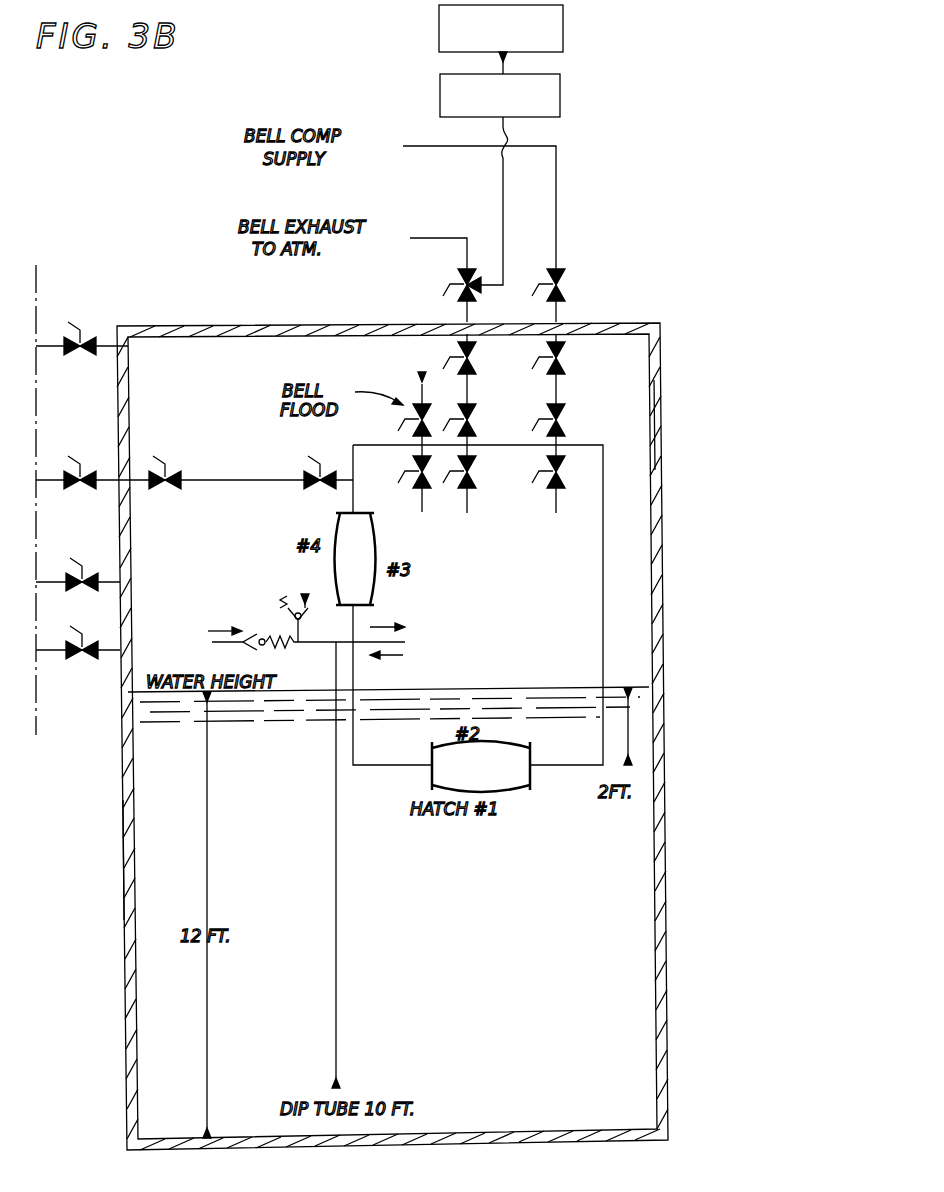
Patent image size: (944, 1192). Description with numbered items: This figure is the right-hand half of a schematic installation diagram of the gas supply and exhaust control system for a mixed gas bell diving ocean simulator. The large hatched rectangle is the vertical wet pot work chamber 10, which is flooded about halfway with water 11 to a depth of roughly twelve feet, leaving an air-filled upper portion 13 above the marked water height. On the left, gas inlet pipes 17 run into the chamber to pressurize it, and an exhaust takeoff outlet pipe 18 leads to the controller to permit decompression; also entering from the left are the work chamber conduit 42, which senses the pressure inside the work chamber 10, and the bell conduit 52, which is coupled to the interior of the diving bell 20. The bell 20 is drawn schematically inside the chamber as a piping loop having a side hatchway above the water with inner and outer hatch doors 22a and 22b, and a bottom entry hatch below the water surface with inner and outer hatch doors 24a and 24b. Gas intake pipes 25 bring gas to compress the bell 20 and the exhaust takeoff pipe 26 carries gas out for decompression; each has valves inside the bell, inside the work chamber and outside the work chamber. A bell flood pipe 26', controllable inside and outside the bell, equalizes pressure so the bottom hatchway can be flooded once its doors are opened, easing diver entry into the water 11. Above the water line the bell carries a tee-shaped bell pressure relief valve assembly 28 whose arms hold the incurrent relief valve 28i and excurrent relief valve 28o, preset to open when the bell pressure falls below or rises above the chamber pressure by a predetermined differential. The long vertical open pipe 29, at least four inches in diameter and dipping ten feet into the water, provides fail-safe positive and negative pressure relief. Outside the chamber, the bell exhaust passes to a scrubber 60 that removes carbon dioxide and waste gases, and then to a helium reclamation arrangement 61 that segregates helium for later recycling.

The work chamber 10 is at (668, 783).
The water 11 is at (150, 863).
The air-filled upper portion 13 is at (628, 424).
The gas inlet pipes 17 is at (100, 580).
The exhaust takeoff outlet pipe 18 is at (100, 648).
The diving bell 20 is at (603, 590).
The inner hatch door 22a is at (377, 538).
The outer hatch door 22b is at (337, 569).
The inner hatch door 24a is at (530, 742).
The outer hatch door 24b is at (530, 785).
The gas inlet pipes 25 is at (556, 490).
The exhaust takeoff pipe 26 is at (463, 449).
The bell flood pipe 26' is at (398, 433).
The bell pressure relief valve assembly 28 is at (350, 642).
The incurrent relief valve 28i is at (215, 650).
The excurrent relief valve 28o is at (296, 622).
The vertical open pipe 29 is at (338, 905).
The work chamber conduit 42 is at (96, 346).
The bell conduit 52 is at (100, 478).
The scrubber 60 is at (560, 97).
The helium reclamation arrangement 61 is at (563, 30).